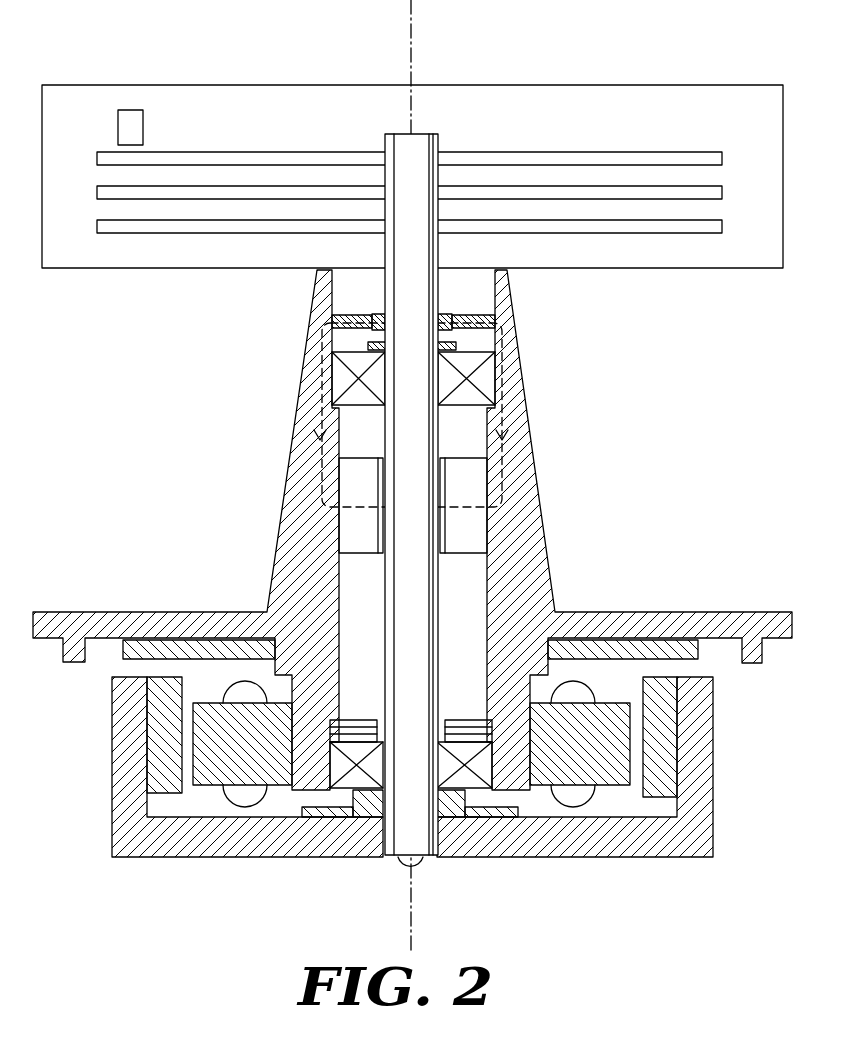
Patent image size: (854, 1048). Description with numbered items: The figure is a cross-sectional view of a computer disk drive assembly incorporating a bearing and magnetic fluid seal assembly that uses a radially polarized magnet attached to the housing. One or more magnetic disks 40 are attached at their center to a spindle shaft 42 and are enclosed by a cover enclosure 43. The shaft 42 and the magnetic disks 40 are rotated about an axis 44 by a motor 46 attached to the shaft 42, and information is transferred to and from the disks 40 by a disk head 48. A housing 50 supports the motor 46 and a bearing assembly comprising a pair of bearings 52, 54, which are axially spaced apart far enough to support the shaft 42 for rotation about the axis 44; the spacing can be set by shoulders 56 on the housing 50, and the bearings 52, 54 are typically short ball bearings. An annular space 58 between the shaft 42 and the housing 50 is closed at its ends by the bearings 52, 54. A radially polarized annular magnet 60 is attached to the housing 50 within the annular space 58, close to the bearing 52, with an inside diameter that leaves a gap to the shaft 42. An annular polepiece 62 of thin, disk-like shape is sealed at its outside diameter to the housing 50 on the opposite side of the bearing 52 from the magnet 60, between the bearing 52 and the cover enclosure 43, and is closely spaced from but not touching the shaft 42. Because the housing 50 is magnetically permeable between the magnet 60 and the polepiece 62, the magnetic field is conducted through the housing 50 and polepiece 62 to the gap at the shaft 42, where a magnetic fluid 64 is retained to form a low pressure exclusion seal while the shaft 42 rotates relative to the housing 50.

The magnetic disks 40 is at (248, 152).
The spindle shaft 42 is at (385, 140).
The cover enclosure 43 is at (198, 85).
The axis 44 is at (409, 28).
The motor 46 is at (280, 862).
The disk head 48 is at (128, 127).
The housing 50 is at (298, 463).
The bearing 52 is at (338, 374).
The bearing 54 is at (354, 750).
The shoulders 56 is at (336, 417).
The annular space 58 is at (374, 638).
The radially polarized annular magnet 60 is at (353, 517).
The annular polepiece 62 is at (346, 313).
The magnetic fluid 64 is at (378, 313).